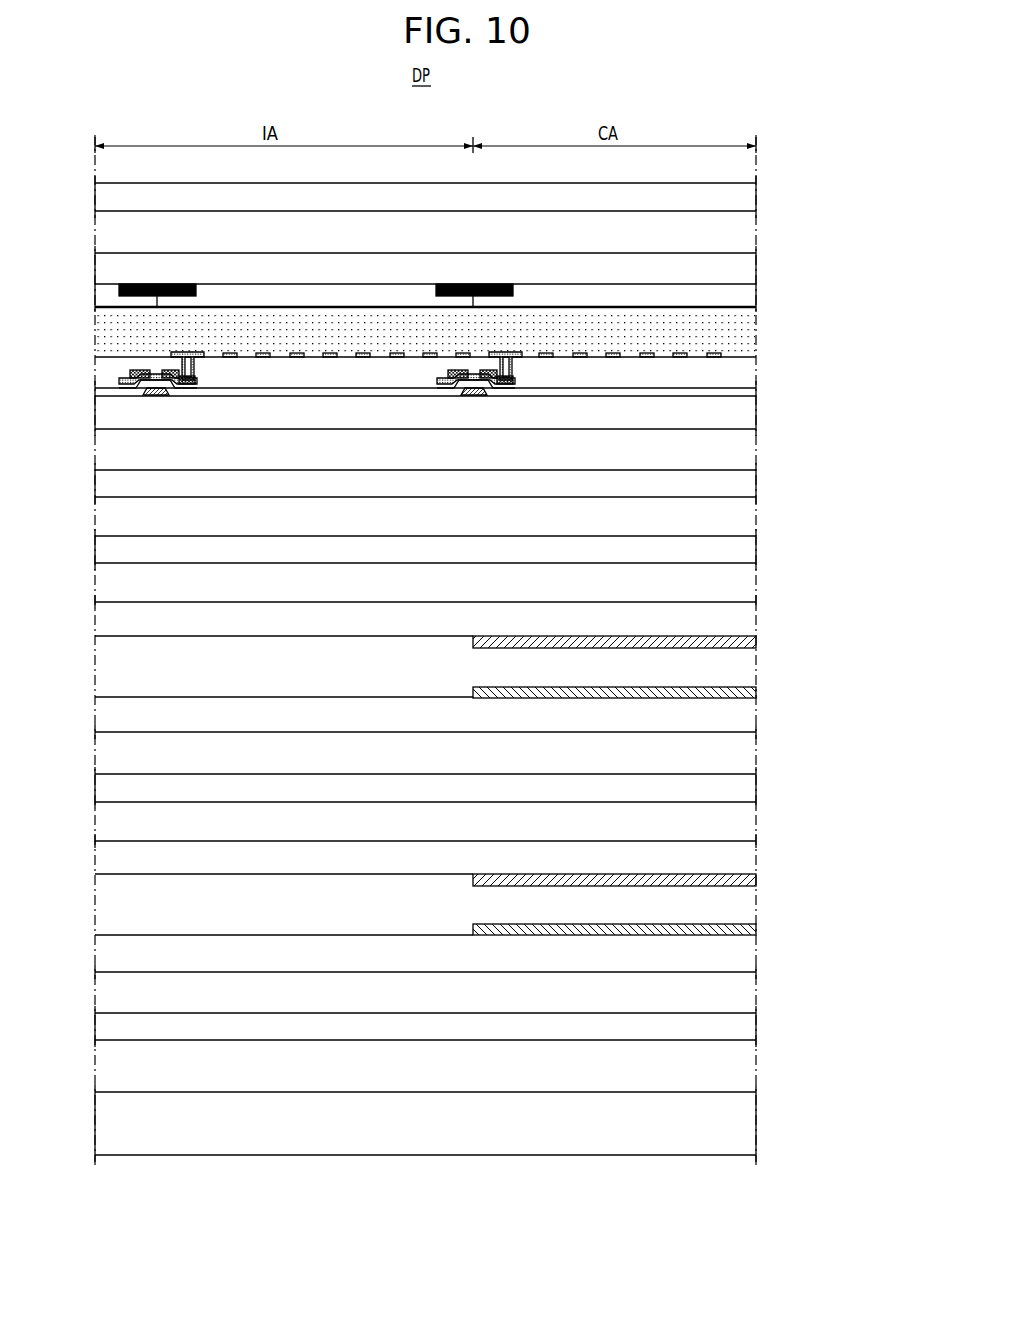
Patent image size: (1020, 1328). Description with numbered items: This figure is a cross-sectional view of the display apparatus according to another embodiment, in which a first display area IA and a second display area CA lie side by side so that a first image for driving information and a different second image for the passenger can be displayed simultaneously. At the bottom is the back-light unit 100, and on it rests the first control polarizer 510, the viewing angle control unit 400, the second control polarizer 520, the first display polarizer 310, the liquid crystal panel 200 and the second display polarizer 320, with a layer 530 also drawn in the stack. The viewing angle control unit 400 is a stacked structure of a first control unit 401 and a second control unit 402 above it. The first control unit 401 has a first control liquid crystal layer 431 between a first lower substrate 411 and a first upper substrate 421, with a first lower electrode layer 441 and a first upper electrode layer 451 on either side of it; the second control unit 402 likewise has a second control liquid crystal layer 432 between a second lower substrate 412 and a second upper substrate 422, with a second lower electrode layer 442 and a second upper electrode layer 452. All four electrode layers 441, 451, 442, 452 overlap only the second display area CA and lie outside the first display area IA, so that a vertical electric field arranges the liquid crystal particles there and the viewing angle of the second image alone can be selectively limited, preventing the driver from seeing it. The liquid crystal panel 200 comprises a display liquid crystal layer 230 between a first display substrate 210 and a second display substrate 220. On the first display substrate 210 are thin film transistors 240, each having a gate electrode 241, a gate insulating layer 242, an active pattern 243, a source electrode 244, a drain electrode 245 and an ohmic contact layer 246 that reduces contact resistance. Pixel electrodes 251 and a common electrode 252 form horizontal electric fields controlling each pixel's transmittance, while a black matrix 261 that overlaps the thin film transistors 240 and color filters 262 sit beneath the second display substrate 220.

The back-light unit 100 is at (752, 1120).
The liquid crystal panel 200 is at (808, 315).
The first display substrate 210 is at (752, 410).
The second display substrate 220 is at (752, 271).
The display liquid crystal layer 230 is at (100, 326).
The thin film transistor 240 is at (52, 347).
The gate electrode 241 is at (147, 394).
The gate insulating layer 242 is at (130, 397).
The active pattern 243 is at (132, 390).
The source electrode 244 is at (133, 371).
The drain electrode 245 is at (180, 358).
The ohmic contact layer 246 is at (122, 381).
The pixel electrode 251 is at (725, 356).
The common electrode 252 is at (688, 358).
The black matrix 261 is at (118, 291).
The color filter 262 is at (752, 296).
The first display polarizer 310 is at (752, 483).
The second display polarizer 320 is at (752, 196).
The viewing angle control unit 400 is at (878, 670).
The first control unit 401 is at (808, 906).
The second control unit 402 is at (808, 668).
The first lower substrate 411 is at (752, 953).
The second lower substrate 412 is at (752, 717).
The first upper substrate 421 is at (752, 855).
The second upper substrate 422 is at (752, 615).
The first control liquid crystal layer 431 is at (98, 908).
The second control liquid crystal layer 432 is at (98, 668).
The first lower electrode layer 441 is at (752, 930).
The second lower electrode layer 442 is at (752, 693).
The first upper electrode layer 451 is at (752, 882).
The second upper electrode layer 452 is at (752, 642).
The first control polarizer 510 is at (752, 1027).
The second control polarizer 520 is at (98, 790).
The fourth adhesive layer 530 is at (752, 549).